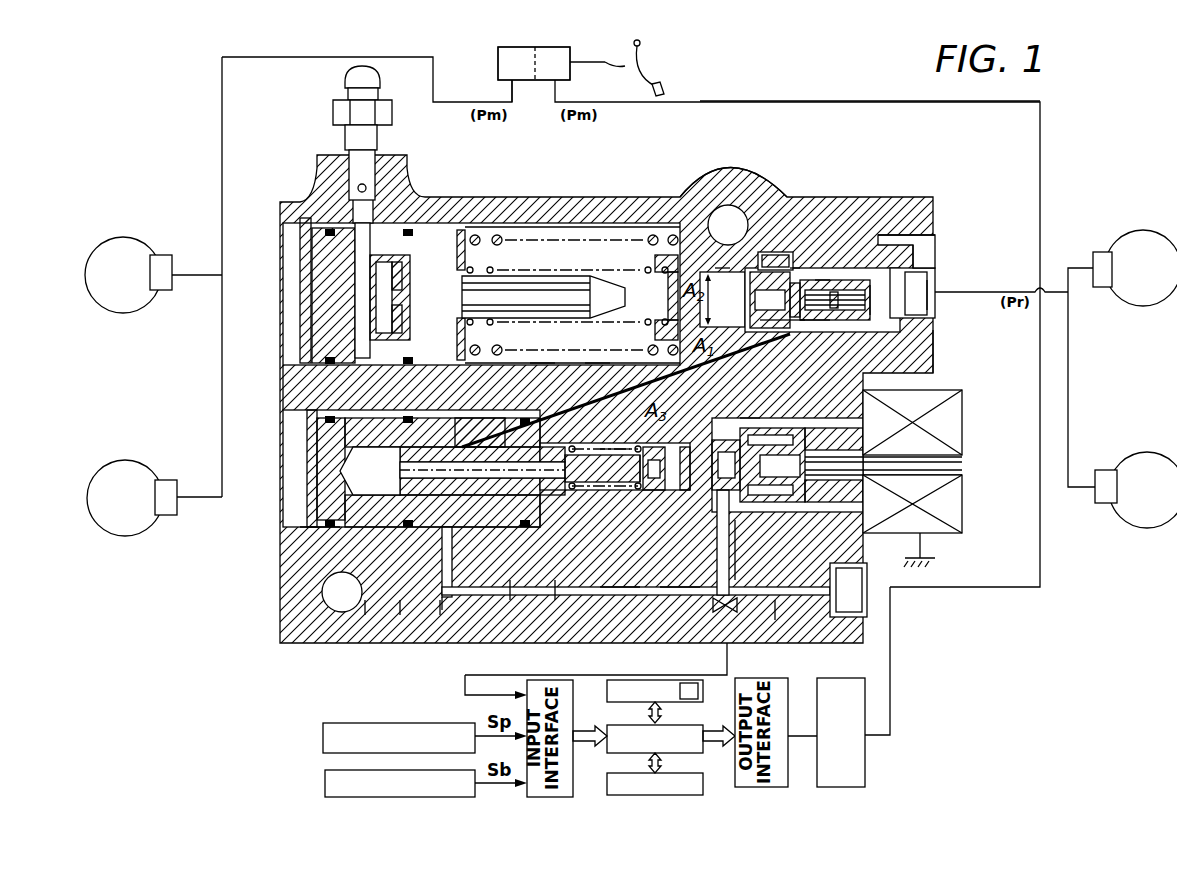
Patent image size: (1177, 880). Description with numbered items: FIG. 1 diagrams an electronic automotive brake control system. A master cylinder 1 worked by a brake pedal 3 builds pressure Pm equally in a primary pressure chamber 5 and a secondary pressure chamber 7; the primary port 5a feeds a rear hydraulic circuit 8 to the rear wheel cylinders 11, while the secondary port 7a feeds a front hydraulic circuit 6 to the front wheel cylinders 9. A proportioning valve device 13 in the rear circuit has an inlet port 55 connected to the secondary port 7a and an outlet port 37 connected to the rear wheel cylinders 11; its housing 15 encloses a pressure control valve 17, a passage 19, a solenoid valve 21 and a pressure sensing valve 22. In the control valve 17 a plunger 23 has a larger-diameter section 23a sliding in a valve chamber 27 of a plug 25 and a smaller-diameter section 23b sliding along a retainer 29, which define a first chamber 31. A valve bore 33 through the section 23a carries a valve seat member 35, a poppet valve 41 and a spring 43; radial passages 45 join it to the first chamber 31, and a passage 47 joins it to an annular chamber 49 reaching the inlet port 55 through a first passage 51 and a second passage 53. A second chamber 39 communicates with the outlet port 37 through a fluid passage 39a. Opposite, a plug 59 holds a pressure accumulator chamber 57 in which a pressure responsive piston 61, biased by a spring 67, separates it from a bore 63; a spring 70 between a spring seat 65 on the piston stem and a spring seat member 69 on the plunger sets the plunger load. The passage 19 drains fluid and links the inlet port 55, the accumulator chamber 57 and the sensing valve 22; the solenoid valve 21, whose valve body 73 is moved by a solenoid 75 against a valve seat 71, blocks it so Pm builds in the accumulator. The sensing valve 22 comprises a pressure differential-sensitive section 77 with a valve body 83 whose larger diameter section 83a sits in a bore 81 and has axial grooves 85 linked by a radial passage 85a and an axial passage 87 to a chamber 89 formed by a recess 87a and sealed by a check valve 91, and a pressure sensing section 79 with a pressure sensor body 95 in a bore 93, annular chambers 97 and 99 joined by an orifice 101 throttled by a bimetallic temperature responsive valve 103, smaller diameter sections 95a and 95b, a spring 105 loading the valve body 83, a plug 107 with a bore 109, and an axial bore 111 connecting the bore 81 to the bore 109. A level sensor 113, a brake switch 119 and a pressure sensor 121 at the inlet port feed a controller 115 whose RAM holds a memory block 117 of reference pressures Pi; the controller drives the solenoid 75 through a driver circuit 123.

The master cylinder 1 is at (488, 49).
The brake pedal 3 is at (660, 85).
The primary pressure chamber 5 is at (498, 62).
The primary port 5a is at (510, 86).
The front brake system hydraulic circuit 6 is at (631, 322).
The secondary pressure chamber 7 is at (570, 52).
The secondary port 7a is at (572, 66).
The rear brake system hydraulic circuit 8 is at (810, 101).
The front brake system wheel cylinders 9 is at (170, 262).
The rear brake system wheel cylinders 11 is at (1097, 250).
The proportioning valve device 13 is at (731, 140).
The housing 15 is at (300, 200).
The pressure control valve 17 is at (796, 268).
The passage 19 is at (340, 380).
The solenoid valve 21 is at (968, 397).
The pressure sensor valve 22 is at (596, 671).
The plunger 23 is at (840, 285).
The larger-diameter section 23a is at (822, 278).
The smaller-diameter section 23b is at (720, 268).
The plug 25 is at (930, 260).
The valve chamber 27 is at (935, 340).
The retainer 29 is at (718, 275).
The first chamber 31 is at (745, 275).
The valve bore 33 is at (872, 295).
The valve seat member 35 is at (935, 237).
The outlet port 37 is at (920, 290).
The second chamber 39 is at (920, 300).
The fluid passage 39a is at (935, 293).
The poppet valve 41 is at (812, 325).
The spring 43 is at (850, 295).
The radial passages 45 is at (772, 262).
The passage 47 is at (798, 285).
The annular chamber 49 is at (800, 332).
The first passage 51 is at (780, 332).
The second passage 53 is at (405, 600).
The inlet port 55 is at (870, 600).
The pressure accumulator chamber 57 is at (365, 350).
The plug 59 is at (335, 262).
The pressure responsive piston 61 is at (412, 270).
The bore 63 is at (485, 235).
The spring seat 65 is at (455, 320).
The spring 67 is at (550, 268).
The spring seat member 69 is at (660, 285).
The spring 70 is at (520, 285).
The valve seat 71 is at (740, 464).
The valve body 73 is at (772, 465).
The solenoid 75 is at (945, 500).
The pressure differential-sensitive section 77 is at (620, 609).
The pressure sensing section 79 is at (445, 600).
The bore 81 is at (612, 492).
The valve body 83 is at (596, 378).
The larger diameter section 83a is at (676, 610).
The axial grooves 85 is at (655, 490).
The radial passage 85a is at (640, 490).
The axial passage 87 is at (660, 420).
The recess 87a is at (732, 522).
The chamber 89 is at (685, 492).
The check valve 91 is at (745, 418).
The bore 93 is at (320, 430).
The pressure sensor body 95 is at (470, 600).
The smaller diameter section 95a is at (535, 378).
The smaller diameter section 95b is at (330, 540).
The annular chamber 97 is at (560, 580).
The annular chamber 99 is at (370, 600).
The orifice 101 is at (455, 420).
The fluid temperature responsive valve 103 is at (515, 580).
The spring 105 is at (590, 482).
The plug 107 is at (330, 472).
The bore 109 is at (360, 490).
The axial bore 111 is at (405, 468).
The level sensor 113 is at (323, 735).
The controller 115 is at (712, 764).
The memory block 117 is at (685, 702).
The brake switch 119 is at (325, 785).
The pressure sensor 121 is at (727, 614).
The driver circuit 123 is at (860, 787).